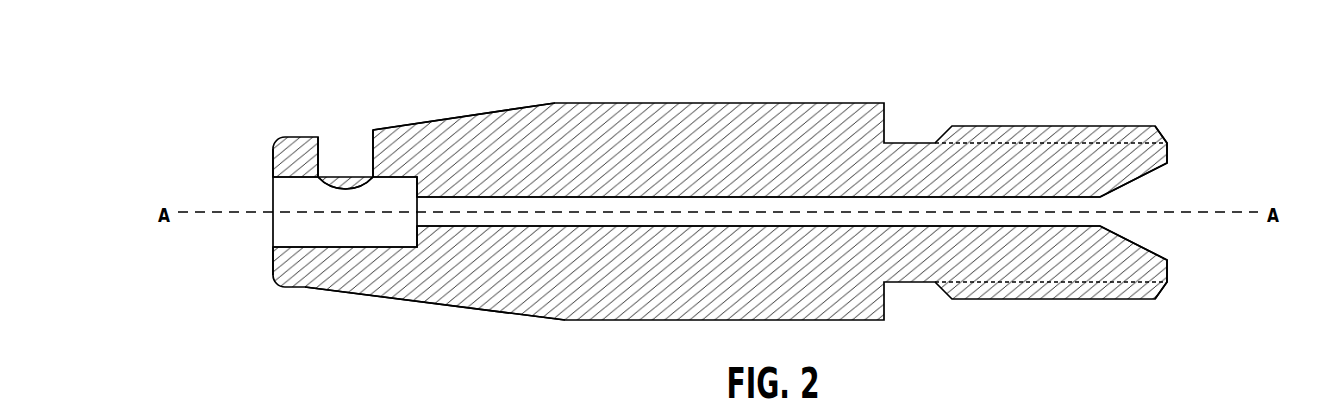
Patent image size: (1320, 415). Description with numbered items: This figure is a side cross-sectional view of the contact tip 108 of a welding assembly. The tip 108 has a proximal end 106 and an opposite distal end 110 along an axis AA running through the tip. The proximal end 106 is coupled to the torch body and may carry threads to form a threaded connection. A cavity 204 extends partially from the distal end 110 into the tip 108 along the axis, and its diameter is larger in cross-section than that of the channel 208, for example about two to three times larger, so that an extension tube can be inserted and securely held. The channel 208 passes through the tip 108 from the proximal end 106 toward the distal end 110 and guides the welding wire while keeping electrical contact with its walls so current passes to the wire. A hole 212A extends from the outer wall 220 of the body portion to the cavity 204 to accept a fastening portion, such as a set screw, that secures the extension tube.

The contact tip 108 is at (753, 92).
The distal end 110 is at (273, 190).
The proximal end 106 is at (1168, 177).
The cavity 204 is at (297, 236).
The channel 208 is at (502, 227).
The hole 212A is at (347, 153).
The outer wall 220 is at (563, 103).